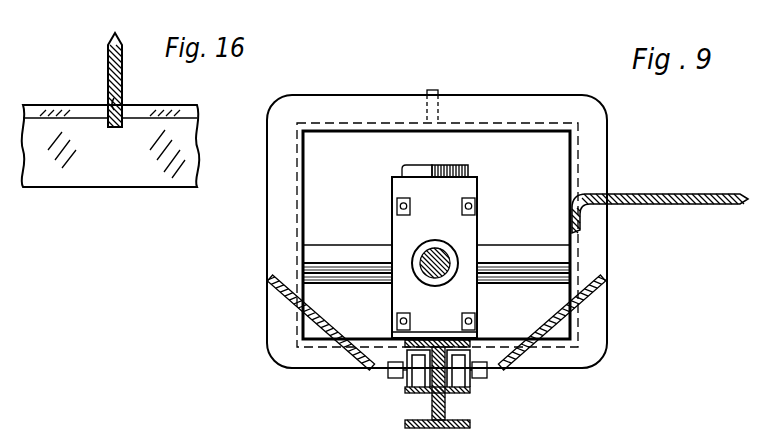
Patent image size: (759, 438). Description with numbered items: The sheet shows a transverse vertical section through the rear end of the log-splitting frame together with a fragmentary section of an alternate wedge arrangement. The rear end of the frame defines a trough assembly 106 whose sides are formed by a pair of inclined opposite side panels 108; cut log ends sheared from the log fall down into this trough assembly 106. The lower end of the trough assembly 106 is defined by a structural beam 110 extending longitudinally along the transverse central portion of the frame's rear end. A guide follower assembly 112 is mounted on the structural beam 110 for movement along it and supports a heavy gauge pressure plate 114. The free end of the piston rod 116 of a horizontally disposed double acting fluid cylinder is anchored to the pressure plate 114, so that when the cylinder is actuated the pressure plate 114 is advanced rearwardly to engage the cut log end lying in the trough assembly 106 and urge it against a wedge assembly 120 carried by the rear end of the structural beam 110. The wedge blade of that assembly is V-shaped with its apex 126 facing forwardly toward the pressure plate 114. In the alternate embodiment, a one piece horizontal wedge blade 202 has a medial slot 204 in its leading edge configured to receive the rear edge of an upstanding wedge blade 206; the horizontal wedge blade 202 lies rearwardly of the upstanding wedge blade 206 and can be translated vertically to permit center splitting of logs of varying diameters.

In FIG. 9, the trough assembly 106 is at (537, 352).
In FIG. 9, the inclined opposite side panels 108 is at (303, 317).
In FIG. 9, the structural beam 110 is at (405, 398).
In FIG. 9, the guide follower assembly 112 is at (476, 378).
In FIG. 9, the pressure plate 114 is at (475, 228).
In FIG. 9, the piston rod 116 is at (427, 247).
In FIG. 9, the wedge assembly 120 is at (470, 168).
In FIG. 9, the apex 126 is at (432, 171).
In FIG. 16, the horizontal wedge blade 202 is at (130, 166).
In FIG. 16, the medial slot 204 is at (118, 98).
In FIG. 16, the upstanding wedge blade 206 is at (108, 73).